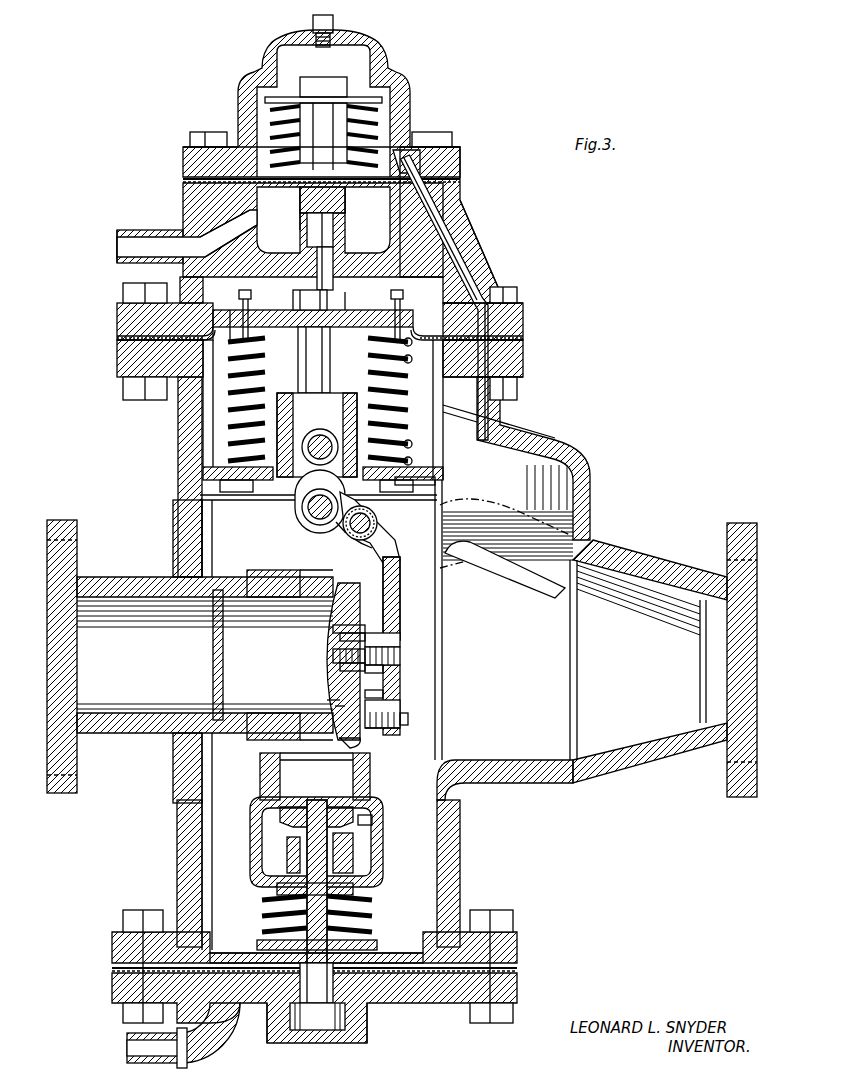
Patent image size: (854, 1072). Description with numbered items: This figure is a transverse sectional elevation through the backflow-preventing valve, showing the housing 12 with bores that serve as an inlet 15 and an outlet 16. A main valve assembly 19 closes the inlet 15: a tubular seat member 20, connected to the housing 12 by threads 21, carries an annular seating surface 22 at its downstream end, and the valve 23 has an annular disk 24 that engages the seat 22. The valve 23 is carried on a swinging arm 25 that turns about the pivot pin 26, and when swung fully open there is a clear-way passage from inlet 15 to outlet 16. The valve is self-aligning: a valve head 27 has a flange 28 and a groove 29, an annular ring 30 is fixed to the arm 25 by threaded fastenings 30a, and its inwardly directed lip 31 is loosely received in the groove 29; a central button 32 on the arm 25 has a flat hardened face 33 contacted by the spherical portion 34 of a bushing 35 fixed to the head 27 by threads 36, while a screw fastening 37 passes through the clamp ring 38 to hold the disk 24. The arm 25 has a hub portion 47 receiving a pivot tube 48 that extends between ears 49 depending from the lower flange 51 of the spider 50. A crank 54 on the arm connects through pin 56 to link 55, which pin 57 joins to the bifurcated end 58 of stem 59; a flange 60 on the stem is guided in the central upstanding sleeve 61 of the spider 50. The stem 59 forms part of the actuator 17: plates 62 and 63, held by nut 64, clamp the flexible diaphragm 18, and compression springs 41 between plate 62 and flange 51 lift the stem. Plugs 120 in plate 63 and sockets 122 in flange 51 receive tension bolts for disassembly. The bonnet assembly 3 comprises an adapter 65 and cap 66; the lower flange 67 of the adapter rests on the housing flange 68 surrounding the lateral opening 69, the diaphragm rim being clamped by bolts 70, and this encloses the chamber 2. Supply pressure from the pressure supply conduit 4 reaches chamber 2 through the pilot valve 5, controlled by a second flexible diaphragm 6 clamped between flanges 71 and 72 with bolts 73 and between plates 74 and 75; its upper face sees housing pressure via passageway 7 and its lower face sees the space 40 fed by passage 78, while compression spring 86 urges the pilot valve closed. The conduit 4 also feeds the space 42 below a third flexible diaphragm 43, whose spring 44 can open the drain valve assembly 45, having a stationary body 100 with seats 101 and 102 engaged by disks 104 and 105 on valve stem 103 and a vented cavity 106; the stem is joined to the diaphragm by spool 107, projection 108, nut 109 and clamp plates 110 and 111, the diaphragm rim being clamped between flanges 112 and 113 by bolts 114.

The chamber 2 is at (452, 287).
The bonnet assembly 3 is at (472, 222).
The pressure supply conduit 4 is at (140, 232).
The pilot valve 5 is at (345, 212).
The second flexible diaphragm 6 is at (414, 160).
The passageway 7 is at (440, 200).
The housing 12 is at (598, 471).
The inlet 15 is at (62, 712).
The outlet 16 is at (746, 715).
The actuator 17 is at (313, 305).
The flexible diaphragm 18 is at (470, 337).
The main valve assembly 19 is at (318, 681).
The tubular seat member 20 is at (281, 586).
The threads 21 is at (222, 588).
The annular seating surface 22 is at (340, 584).
The valve 23 is at (540, 595).
The annular disk 24 is at (330, 700).
The swinging arm 25 is at (452, 498).
The pivot pin 26 is at (378, 575).
The valve head 27 is at (392, 682).
The flange 28 is at (401, 710).
The groove 29 is at (383, 694).
The annular ring 30 is at (385, 728).
The threaded fastenings 30a is at (408, 720).
The inwardly directed lip 31 is at (340, 707).
The central button 32 is at (390, 670).
The flat hardened face 33 is at (397, 656).
The spherical portion 34 is at (397, 643).
The bushing 35 is at (338, 668).
The threads 36 is at (338, 640).
The screw fastening 37 is at (330, 656).
The clamp ring 38 is at (330, 628).
The space 40 is at (183, 197).
The compression springs 41 is at (395, 426).
The space 42 is at (395, 1010).
The third flexible diaphragm 43 is at (443, 967).
The spring 44 is at (370, 893).
The drain valve assembly 45 is at (375, 818).
The hub portion 47 is at (355, 545).
The pivot tube 48 is at (378, 526).
The ears 49 is at (392, 513).
The spider 50 is at (262, 410).
The lower flange 51 is at (425, 478).
The crank 54 is at (348, 533).
The link 55 is at (303, 510).
The pin 56 is at (305, 522).
The pin 57 is at (306, 444).
The bifurcated end 58 is at (376, 404).
The stem 59 is at (298, 372).
The flange 60 is at (314, 412).
The central upstanding sleeve 61 is at (396, 452).
The plate 62 is at (283, 310).
The plate 63 is at (255, 310).
The nut 64 is at (346, 297).
The adapter 65 is at (470, 242).
The cap 66 is at (390, 57).
The lower flange 67 is at (523, 314).
The upper flange 68 is at (523, 368).
The lateral opening 69 is at (523, 353).
The bolts 70 is at (123, 294).
The flange 71 is at (183, 157).
The flange 72 is at (183, 181).
The bolts 73 is at (200, 133).
The plate 74 is at (405, 150).
The plate 75 is at (287, 190).
The passage 78 is at (215, 238).
The compression spring 86 is at (270, 120).
The stationary body 100 is at (384, 849).
The seat 101 is at (370, 800).
The seat 102 is at (328, 890).
The valve stem 103 is at (300, 860).
The disk 104 is at (282, 820).
The disk 105 is at (277, 890).
The cavity 106 is at (355, 838).
The spool 107 is at (377, 924).
The projection 108 is at (308, 977).
The nut 109 is at (310, 1030).
The clamp plate 110 is at (352, 1018).
The clamp plate 111 is at (400, 953).
The flange 112 is at (517, 950).
The flange 113 is at (517, 990).
The bolts 114 is at (145, 910).
The plugs 120 is at (244, 292).
The sockets 122 is at (238, 488).